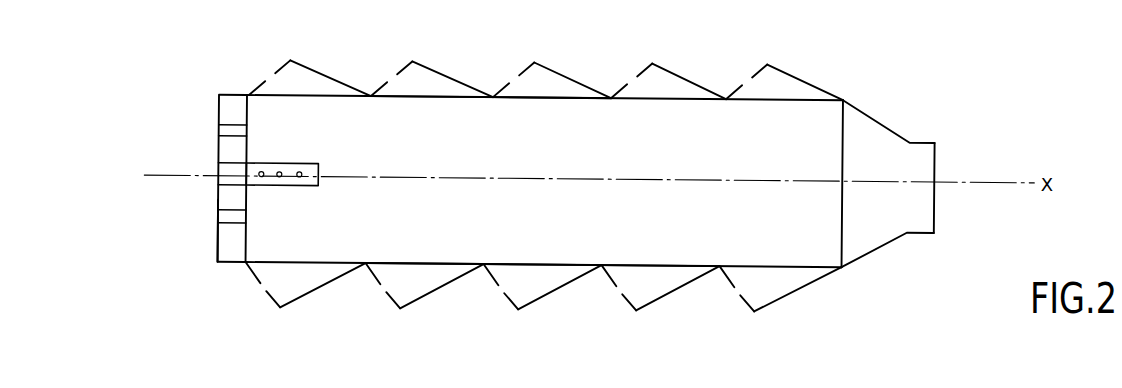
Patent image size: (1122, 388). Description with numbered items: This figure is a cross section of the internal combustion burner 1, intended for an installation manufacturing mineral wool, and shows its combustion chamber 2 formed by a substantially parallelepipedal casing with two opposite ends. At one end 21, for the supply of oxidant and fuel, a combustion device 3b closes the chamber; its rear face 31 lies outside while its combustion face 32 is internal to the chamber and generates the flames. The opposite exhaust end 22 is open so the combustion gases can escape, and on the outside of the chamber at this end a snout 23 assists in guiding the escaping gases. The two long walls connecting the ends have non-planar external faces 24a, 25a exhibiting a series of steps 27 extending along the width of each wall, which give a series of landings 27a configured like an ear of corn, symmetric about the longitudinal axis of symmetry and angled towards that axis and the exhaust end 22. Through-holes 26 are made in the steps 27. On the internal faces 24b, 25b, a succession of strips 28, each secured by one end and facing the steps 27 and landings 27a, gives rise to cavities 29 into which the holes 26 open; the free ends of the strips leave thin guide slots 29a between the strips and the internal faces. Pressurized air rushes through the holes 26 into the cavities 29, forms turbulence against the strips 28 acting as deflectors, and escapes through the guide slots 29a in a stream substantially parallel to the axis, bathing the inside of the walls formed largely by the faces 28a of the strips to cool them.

The internal combustion burner 1 is at (862, 359).
The combustion chamber 2 is at (772, 240).
The combustion device 3b is at (212, 148).
The supply end 21 is at (243, 258).
The exhaust end 22 is at (848, 105).
The snout 23 is at (937, 157).
The external face 24a is at (582, 82).
The internal face 24b is at (417, 103).
The external face 25a is at (685, 286).
The internal face 25b is at (620, 262).
The through-holes 26 is at (271, 71).
The steps 27 is at (280, 67).
The landings 27a is at (455, 80).
The strips 28 is at (347, 90).
The strip faces 28a is at (555, 102).
The cavities 29 is at (313, 82).
The guide slots 29a is at (480, 102).
The rear face 31 is at (218, 232).
The combustion face 32 is at (247, 235).